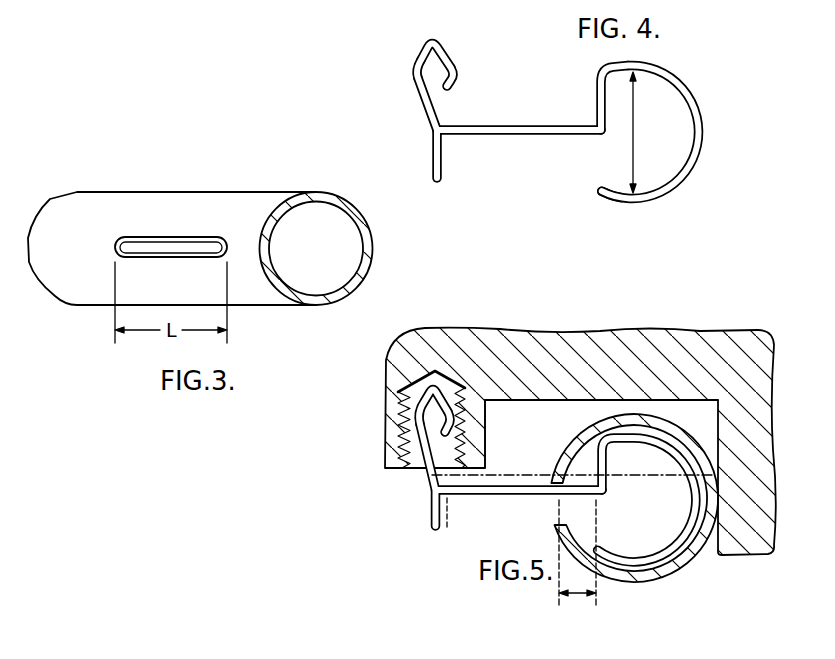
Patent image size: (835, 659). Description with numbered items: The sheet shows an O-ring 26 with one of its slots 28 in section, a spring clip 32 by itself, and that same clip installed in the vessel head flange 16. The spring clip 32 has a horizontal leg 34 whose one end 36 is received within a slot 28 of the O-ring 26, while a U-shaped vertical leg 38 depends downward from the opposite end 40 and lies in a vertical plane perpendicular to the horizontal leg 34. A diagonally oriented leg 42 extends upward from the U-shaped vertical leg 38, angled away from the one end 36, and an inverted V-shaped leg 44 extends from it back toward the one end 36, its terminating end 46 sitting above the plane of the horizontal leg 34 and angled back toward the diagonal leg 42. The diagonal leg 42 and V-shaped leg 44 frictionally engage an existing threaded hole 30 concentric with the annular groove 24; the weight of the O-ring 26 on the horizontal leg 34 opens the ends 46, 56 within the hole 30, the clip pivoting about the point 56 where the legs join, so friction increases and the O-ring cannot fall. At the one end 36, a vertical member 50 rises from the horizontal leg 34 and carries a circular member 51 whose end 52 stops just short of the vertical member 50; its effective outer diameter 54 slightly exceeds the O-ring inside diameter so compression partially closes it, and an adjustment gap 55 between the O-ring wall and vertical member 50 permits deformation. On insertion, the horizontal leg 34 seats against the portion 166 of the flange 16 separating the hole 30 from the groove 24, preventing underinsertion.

In FIG. 5, the vessel head flange 16 is at (692, 340).
In FIG. 5, the annular groove 24 is at (566, 430).
In FIG. 3, the O-ring 26 is at (169, 183).
In FIG. 5, the O-ring 26 is at (681, 566).
In FIG. 3, the slot 28 is at (148, 238).
In FIG. 5, the threaded hole 30 is at (412, 384).
In FIG. 4, the spring clip 32 is at (724, 72).
In FIG. 5, the horizontal leg 34 is at (503, 488).
In FIG. 4, the one end of the horizontal leg 36 is at (712, 116).
In FIG. 4, the U-shaped vertical leg 38 is at (431, 162).
In FIG. 4, the opposite end of the horizontal leg 40 is at (540, 119).
In FIG. 4, the diagonally oriented leg 42 is at (414, 88).
In FIG. 5, the diagonally oriented leg 42 is at (424, 458).
In FIG. 4, the inverted V-shaped leg 44 is at (417, 60).
In FIG. 5, the inverted V-shaped leg 44 is at (416, 407).
In FIG. 4, the terminating end of the inverted V-shaped leg 46 is at (462, 78).
In FIG. 5, the terminating end of the inverted V-shaped leg 46 is at (459, 423).
In FIG. 4, the vertical member 50 is at (596, 95).
In FIG. 4, the circular member 51 is at (694, 157).
In FIG. 5, the circular member 51 is at (693, 494).
In FIG. 4, the end of the circular member 52 is at (597, 193).
In FIG. 4, the effective outer diameter 54 is at (631, 148).
In FIG. 5, the adjustment gap 55 is at (576, 594).
In FIG. 4, the pivot point 56 is at (411, 72).
In FIG. 5, the portion of the vessel head flange 166 is at (487, 456).